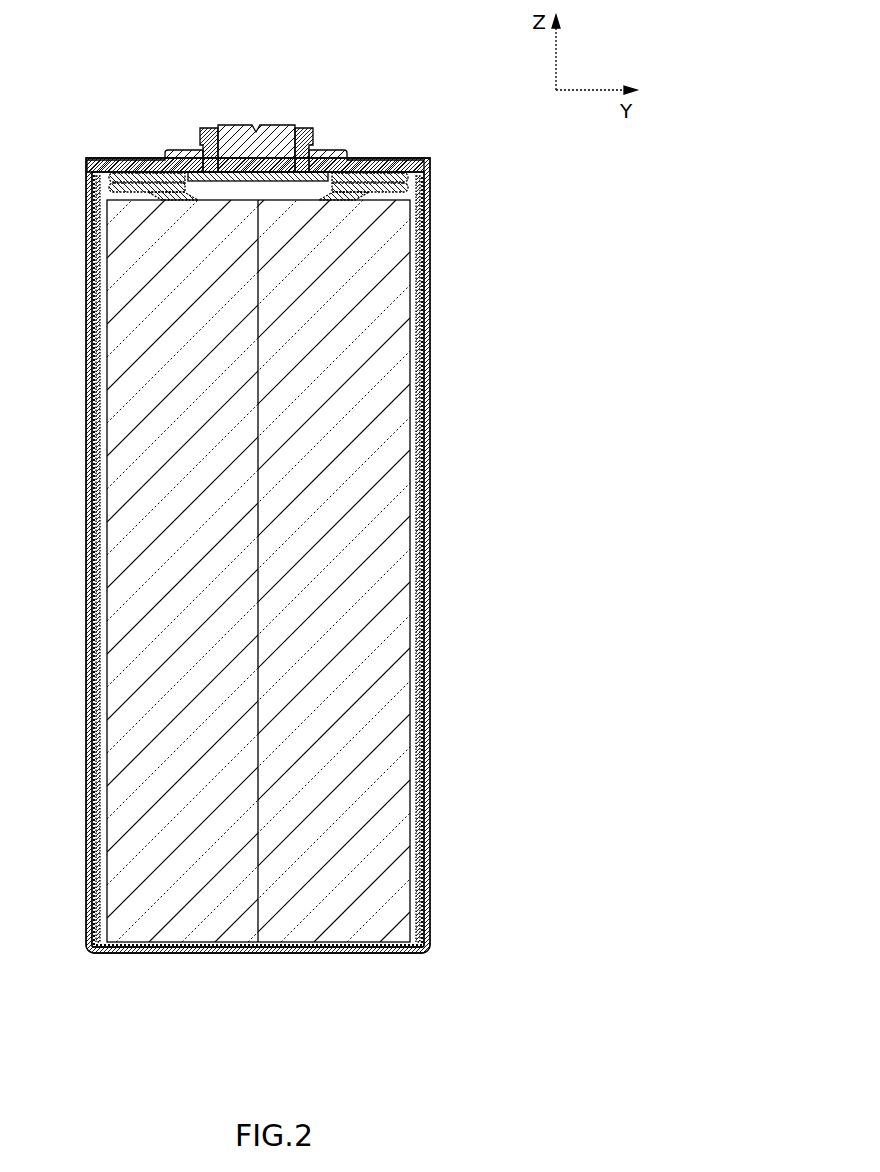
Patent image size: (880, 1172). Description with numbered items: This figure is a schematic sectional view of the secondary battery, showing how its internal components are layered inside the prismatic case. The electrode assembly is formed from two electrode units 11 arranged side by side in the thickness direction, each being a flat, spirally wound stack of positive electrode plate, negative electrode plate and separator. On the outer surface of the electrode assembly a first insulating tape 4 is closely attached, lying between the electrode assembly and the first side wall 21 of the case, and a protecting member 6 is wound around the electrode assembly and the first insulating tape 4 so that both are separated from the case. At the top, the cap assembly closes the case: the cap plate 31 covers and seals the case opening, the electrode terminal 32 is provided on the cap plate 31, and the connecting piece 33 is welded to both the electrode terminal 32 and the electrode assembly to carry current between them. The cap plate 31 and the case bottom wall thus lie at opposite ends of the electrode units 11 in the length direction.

The protecting member 6 is at (86, 398).
The first insulating tape 4 is at (92, 448).
The first side wall 21 is at (96, 598).
The electrode unit 11 is at (190, 935).
The cap plate 31 is at (381, 158).
The electrode terminal 32 is at (243, 126).
The connecting piece 33 is at (150, 157).